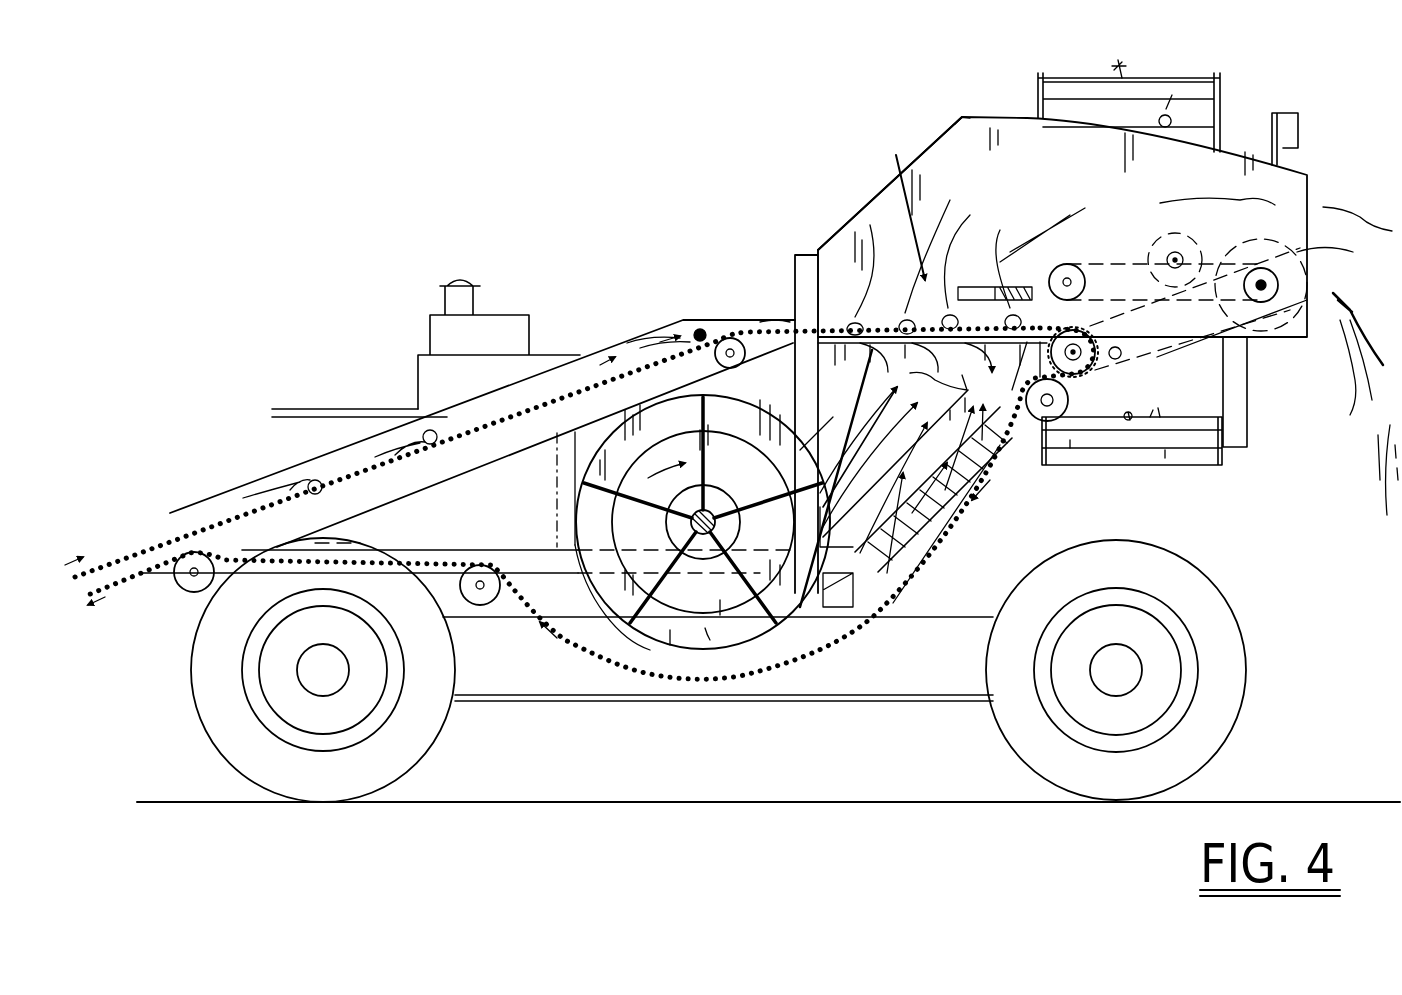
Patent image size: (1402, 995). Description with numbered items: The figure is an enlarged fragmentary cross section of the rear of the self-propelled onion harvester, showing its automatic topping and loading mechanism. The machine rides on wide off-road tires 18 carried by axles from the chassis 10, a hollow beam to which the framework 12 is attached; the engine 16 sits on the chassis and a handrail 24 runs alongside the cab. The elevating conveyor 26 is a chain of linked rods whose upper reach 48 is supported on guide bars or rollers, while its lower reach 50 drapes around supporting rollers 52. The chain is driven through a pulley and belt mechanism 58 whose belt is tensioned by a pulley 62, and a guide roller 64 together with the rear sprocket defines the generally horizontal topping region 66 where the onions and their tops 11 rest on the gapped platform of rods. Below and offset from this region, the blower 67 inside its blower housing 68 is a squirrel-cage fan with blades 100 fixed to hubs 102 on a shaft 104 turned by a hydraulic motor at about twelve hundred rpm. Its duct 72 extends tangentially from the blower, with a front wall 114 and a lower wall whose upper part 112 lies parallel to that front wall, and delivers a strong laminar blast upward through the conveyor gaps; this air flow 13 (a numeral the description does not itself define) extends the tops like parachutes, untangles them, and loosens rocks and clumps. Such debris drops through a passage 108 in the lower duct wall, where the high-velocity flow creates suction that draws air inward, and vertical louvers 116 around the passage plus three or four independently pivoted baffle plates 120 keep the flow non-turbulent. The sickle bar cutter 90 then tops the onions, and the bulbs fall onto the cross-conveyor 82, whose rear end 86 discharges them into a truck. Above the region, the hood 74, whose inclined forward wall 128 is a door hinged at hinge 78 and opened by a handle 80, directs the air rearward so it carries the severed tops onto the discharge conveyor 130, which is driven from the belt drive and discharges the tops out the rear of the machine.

The chassis 10 is at (915, 685).
The tops 11 is at (940, 230).
The framework 12 is at (795, 292).
The air flow 13 is at (912, 412).
The engine 16 is at (553, 352).
The tires 18 is at (432, 720).
The handrail 24 is at (325, 408).
The elevating conveyor 26 is at (357, 473).
The upper reach 48 is at (383, 463).
The lower reach 50 is at (607, 667).
The rollers 52 is at (192, 590).
The pulley and belt mechanism 58 is at (1197, 347).
The pulley 62 is at (1203, 245).
The guide roller 64 is at (723, 345).
The topping region 66 is at (900, 202).
The blower 67 is at (650, 650).
The blower housing 68 is at (707, 637).
The duct 72 is at (848, 400).
The hood 74 is at (1025, 118).
The hinge 78 is at (961, 117).
The handle 80 is at (820, 246).
The cross-conveyor 82 is at (1207, 467).
The rear end 86 is at (1095, 76).
The sickle bar cutter 90 is at (973, 286).
The blades 100 is at (672, 522).
The hubs 102 is at (717, 565).
The shaft 104 is at (712, 500).
The passage 108 is at (860, 553).
The upper part of lower wall 112 is at (1020, 470).
The front wall 114 is at (860, 378).
The louvers 116 is at (880, 573).
The baffle plates 120 is at (875, 343).
The forward wall 128 is at (873, 200).
The discharge conveyor 130 is at (1100, 262).